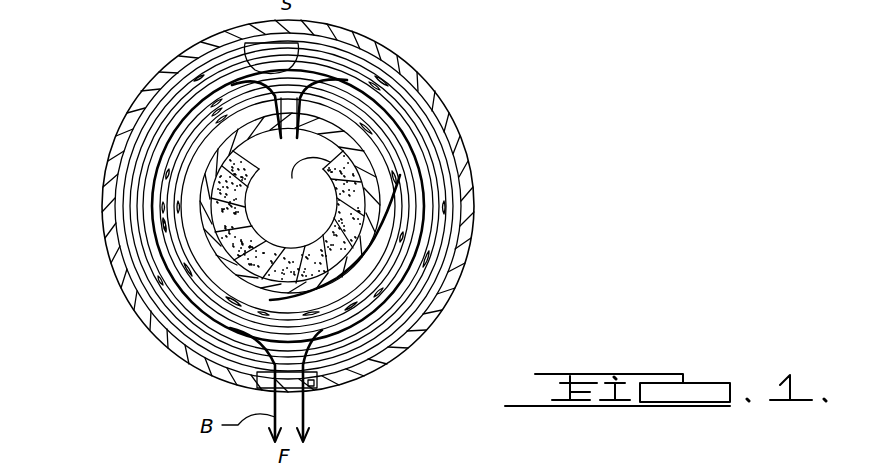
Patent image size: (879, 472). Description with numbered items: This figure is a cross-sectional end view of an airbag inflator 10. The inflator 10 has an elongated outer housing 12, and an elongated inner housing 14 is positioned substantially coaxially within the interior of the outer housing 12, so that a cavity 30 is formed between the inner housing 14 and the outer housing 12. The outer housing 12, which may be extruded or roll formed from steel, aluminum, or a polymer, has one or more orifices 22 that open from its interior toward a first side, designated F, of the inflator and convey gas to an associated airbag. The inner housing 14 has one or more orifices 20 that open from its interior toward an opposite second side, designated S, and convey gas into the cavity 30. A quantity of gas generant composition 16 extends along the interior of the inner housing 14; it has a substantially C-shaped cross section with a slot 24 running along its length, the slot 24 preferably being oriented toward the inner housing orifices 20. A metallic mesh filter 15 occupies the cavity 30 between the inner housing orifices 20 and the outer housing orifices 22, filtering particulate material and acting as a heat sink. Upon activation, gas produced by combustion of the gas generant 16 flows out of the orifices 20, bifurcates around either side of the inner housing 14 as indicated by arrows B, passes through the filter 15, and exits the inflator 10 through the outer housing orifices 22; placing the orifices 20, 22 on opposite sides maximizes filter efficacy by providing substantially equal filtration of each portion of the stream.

The inflator 10 is at (537, 135).
The outer housing 12 is at (418, 324).
The inner housing 14 is at (210, 236).
The metallic mesh filter 15 is at (192, 97).
The gas generant composition 16 is at (242, 262).
The inner housing orifice 20 is at (345, 80).
The outer housing orifice 22 is at (313, 387).
The slot 24 is at (291, 203).
The cavity 30 is at (288, 63).